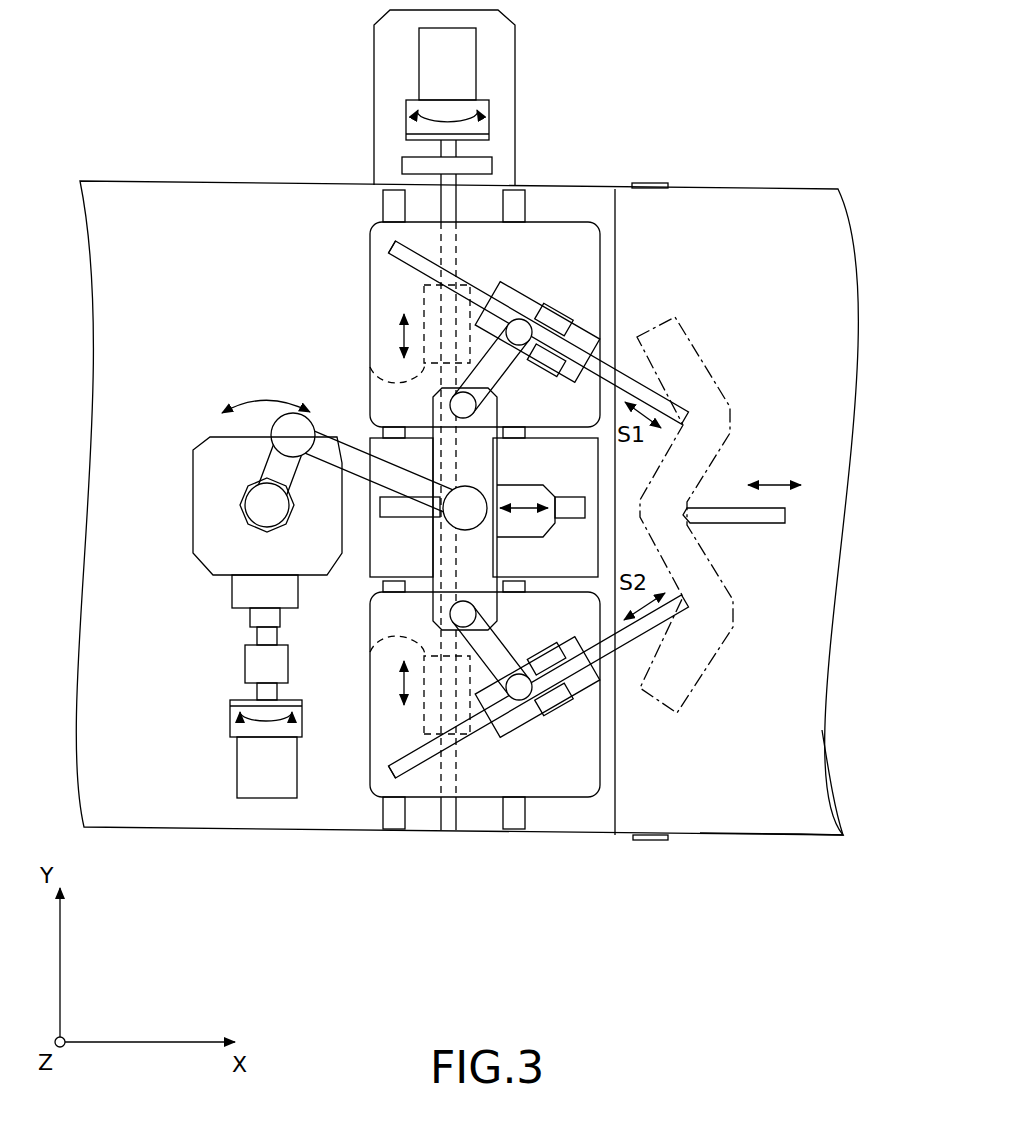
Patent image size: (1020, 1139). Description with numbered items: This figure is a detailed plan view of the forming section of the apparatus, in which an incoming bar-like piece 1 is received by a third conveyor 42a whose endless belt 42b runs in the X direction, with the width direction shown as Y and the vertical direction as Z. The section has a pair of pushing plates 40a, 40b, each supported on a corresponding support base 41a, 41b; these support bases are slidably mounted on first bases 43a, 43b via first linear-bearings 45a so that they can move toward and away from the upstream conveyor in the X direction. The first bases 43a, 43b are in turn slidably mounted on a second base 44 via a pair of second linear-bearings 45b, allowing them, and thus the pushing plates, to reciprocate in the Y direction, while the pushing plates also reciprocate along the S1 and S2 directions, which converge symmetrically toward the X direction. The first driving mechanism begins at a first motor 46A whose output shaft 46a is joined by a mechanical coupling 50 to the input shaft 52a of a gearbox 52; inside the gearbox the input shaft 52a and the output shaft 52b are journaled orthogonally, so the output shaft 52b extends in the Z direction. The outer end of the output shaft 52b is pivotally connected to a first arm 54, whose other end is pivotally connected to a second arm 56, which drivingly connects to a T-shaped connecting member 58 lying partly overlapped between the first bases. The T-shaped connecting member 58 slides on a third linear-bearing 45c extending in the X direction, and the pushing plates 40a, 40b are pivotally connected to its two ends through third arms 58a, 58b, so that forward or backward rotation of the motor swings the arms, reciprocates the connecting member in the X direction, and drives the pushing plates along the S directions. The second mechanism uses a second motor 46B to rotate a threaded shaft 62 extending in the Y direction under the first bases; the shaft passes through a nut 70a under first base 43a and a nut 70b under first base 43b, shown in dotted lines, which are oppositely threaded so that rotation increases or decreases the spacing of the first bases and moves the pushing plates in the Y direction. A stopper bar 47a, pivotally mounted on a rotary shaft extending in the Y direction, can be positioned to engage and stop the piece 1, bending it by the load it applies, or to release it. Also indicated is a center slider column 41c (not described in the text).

The bar-like piece 1 is at (700, 362).
The pushing plate 40a is at (548, 310).
The pushing plate 40b is at (560, 695).
The support base 41a is at (578, 333).
The support base 41b is at (548, 665).
The center slider column 41c is at (488, 557).
The third conveyor 42a is at (829, 841).
The endless belt 42b is at (753, 826).
The first base 43a is at (372, 290).
The first base 43b is at (372, 764).
The second base 44 is at (132, 827).
The first linear-bearing 45a is at (392, 246).
The second linear-bearing 45b is at (383, 206).
The third linear-bearing 45c is at (570, 497).
The first motor 46A is at (240, 784).
The second motor 46B is at (460, 52).
The output shaft 46a is at (272, 692).
The bar 47a is at (760, 522).
The mechanical coupling 50 is at (247, 670).
The gearbox 52 is at (195, 541).
The input shaft 52a is at (272, 637).
The output shaft 52b is at (250, 503).
The first arm 54 is at (270, 467).
The second arm 56 is at (338, 448).
The T-shaped connecting member 58 is at (497, 486).
The third arm 58a is at (497, 366).
The third arm 58b is at (512, 618).
The threaded shaft 62 is at (456, 212).
The nut 70a is at (372, 372).
The nut 70b is at (397, 630).